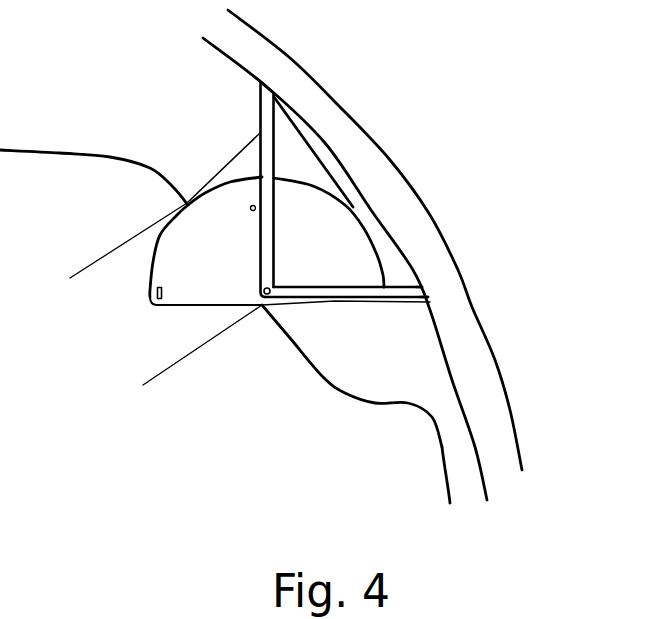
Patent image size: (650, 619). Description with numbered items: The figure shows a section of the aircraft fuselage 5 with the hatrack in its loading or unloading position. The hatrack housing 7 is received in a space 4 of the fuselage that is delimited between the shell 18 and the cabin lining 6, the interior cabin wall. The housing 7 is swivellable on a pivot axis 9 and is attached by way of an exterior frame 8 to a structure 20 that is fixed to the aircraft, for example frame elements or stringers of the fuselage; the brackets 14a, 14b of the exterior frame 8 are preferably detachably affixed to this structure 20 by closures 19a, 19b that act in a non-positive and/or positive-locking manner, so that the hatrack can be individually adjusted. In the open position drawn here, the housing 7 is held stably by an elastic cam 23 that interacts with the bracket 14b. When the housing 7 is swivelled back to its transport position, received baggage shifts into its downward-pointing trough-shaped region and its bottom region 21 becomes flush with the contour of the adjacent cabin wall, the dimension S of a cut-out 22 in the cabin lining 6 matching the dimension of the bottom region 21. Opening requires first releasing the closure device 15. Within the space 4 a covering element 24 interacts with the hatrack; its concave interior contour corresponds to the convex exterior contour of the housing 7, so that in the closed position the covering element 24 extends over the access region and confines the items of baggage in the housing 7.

The space 4 is at (410, 385).
The aircraft fuselage 5 is at (516, 348).
The cabin lining 6 is at (442, 470).
The housing 7 is at (373, 213).
The exterior frame 8 is at (230, 80).
The pivot axis 9 is at (262, 308).
The bracket 14a is at (373, 300).
The bracket 14b is at (269, 117).
The closure device 15 is at (160, 285).
The shell 18 is at (508, 400).
The closure 19a is at (428, 294).
The closure 19b is at (268, 84).
The structure fixed to the aircraft 20 is at (482, 458).
The bottom region 21 is at (229, 307).
The cut-out 22 is at (186, 205).
The elastic cam 23 is at (252, 205).
The covering element 24 is at (290, 162).
The dimension of the cut-out S is at (80, 282).